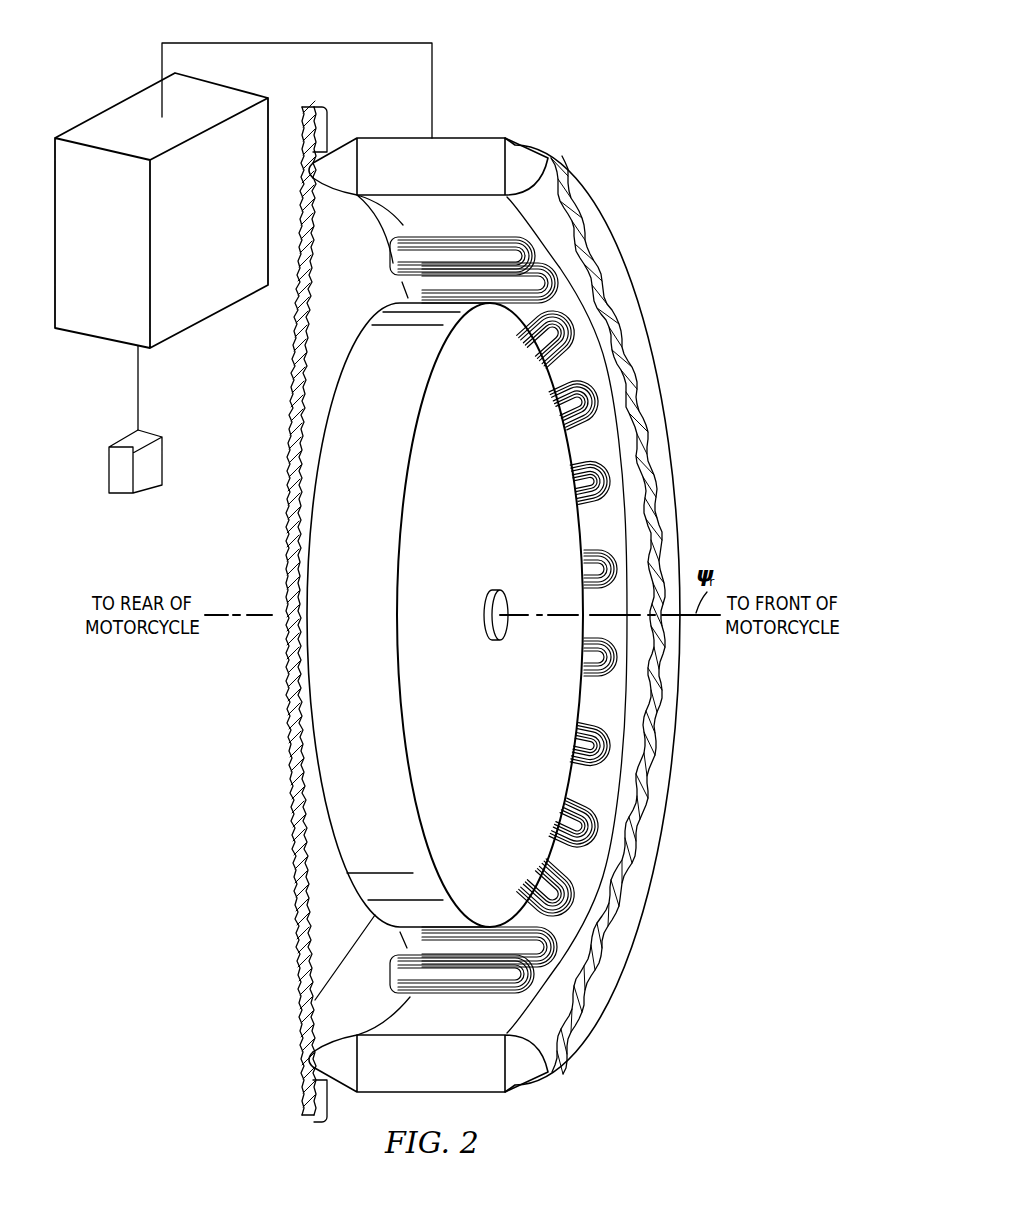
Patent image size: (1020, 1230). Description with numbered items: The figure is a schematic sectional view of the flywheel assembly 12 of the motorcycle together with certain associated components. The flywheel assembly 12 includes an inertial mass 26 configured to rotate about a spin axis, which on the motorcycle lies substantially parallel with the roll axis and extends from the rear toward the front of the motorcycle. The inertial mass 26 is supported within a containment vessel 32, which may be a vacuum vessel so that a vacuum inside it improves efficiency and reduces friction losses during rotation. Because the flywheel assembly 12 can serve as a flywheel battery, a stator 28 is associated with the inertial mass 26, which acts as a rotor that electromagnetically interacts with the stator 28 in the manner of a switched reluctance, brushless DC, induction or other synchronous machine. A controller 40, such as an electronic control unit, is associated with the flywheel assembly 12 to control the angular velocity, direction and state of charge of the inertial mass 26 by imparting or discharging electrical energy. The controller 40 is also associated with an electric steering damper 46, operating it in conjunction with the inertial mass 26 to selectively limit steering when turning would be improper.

The flywheel assembly 12 is at (640, 83).
The inertial mass 26 is at (510, 482).
The stator 28 is at (555, 862).
The containment vessel 32 is at (486, 139).
The controller 40 is at (218, 234).
The steering damper 46 is at (147, 478).